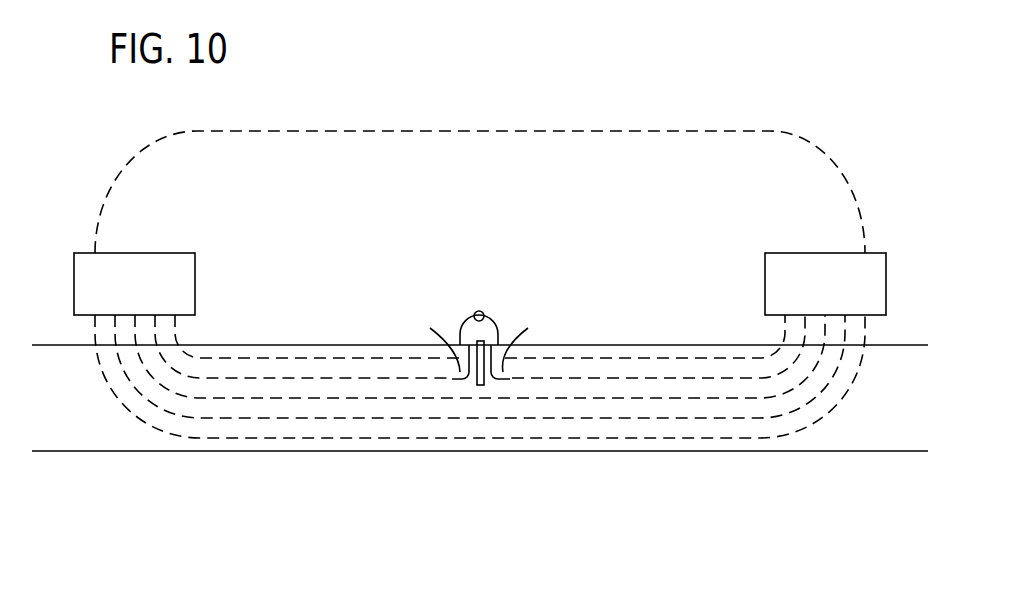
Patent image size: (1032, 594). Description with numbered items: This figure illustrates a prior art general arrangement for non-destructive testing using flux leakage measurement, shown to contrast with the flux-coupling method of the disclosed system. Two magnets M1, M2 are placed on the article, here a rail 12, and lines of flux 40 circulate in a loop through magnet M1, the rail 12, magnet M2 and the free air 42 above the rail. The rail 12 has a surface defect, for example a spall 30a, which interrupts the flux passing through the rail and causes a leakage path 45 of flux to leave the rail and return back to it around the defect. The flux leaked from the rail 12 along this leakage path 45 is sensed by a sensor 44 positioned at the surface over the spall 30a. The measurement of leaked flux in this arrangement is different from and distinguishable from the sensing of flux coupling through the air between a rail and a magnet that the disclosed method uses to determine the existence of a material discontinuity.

The rail 12 is at (46, 415).
The lines of flux 40 is at (617, 130).
The free air 42 is at (465, 196).
The sensor 44 is at (486, 308).
The leakage path 45 is at (458, 316).
The spall 30a is at (478, 394).
The magnet M1 is at (150, 253).
The magnet M2 is at (812, 253).